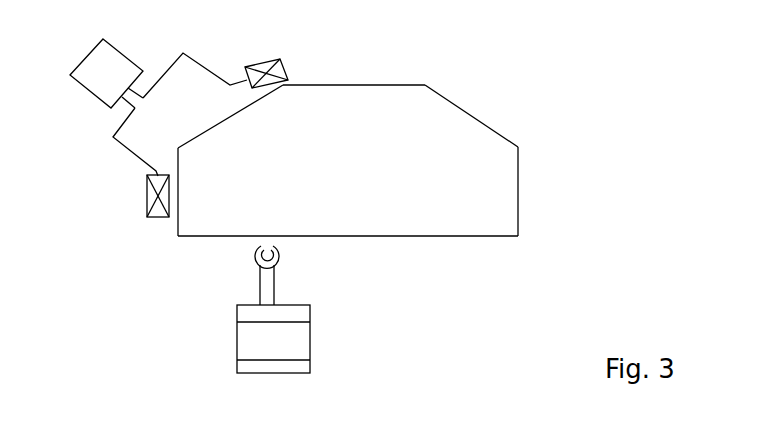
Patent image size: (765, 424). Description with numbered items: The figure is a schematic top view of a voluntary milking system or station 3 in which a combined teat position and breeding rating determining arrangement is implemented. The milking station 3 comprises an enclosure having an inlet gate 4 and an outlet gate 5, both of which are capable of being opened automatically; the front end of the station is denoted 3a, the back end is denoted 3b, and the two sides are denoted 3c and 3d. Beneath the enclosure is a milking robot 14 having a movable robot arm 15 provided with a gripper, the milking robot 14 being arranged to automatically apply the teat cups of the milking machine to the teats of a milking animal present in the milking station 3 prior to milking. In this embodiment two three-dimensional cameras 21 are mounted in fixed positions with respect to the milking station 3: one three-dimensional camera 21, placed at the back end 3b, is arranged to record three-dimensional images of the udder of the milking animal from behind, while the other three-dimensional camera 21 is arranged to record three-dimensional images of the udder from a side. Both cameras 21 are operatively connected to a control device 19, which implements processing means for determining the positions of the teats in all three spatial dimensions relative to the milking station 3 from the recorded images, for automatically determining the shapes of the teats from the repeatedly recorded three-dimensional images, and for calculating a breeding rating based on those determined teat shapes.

The voluntary milking system or station 3 is at (530, 116).
The front end of the milking station 3a is at (518, 186).
The back end of the milking station 3b is at (175, 162).
The side of the milking station 3c is at (347, 84).
The side of the milking station 3d is at (433, 237).
The inlet gate 4 is at (222, 120).
The outlet gate 5 is at (447, 99).
The milking robot 14 is at (237, 340).
The robot arm 15 is at (274, 281).
The control device 19 is at (127, 55).
The three-dimensional camera 21 is at (262, 63).